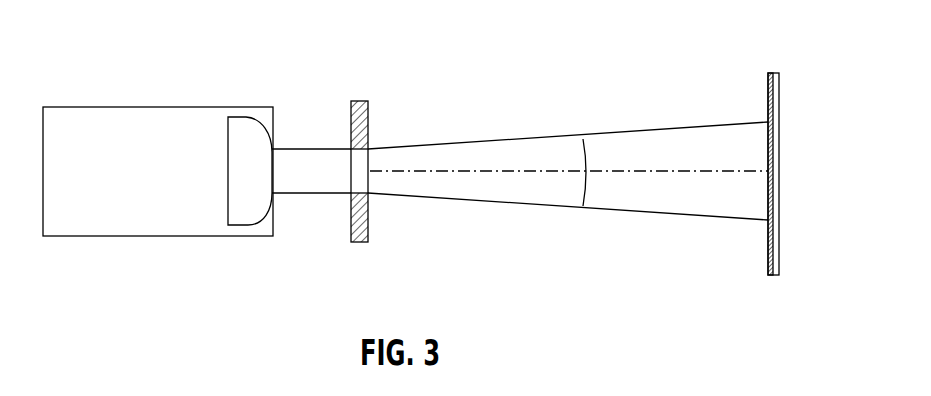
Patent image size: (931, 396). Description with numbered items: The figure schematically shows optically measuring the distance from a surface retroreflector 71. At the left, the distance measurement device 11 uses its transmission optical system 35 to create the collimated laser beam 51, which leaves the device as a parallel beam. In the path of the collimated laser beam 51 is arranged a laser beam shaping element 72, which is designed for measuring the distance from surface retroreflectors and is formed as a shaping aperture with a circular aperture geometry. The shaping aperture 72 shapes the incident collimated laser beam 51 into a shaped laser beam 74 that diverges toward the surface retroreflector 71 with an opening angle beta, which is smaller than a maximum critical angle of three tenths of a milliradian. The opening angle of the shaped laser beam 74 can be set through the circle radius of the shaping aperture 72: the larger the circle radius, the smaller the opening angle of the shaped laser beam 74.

The distance measurement device 11 is at (124, 107).
The transmission optical system 35 is at (242, 130).
The collimated laser beam 51 is at (307, 147).
The laser beam shaping element 72 is at (357, 100).
The shaped laser beam 74 is at (657, 128).
The surface retroreflector 71 is at (779, 78).